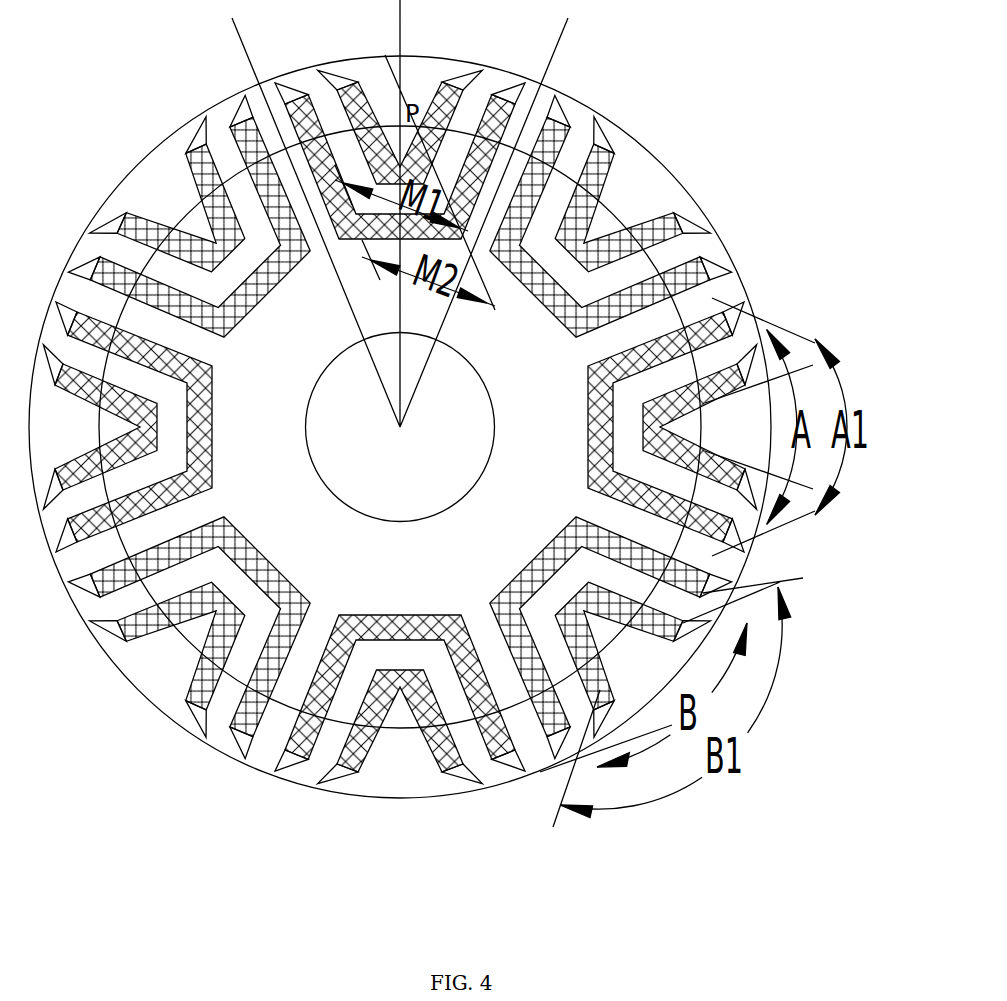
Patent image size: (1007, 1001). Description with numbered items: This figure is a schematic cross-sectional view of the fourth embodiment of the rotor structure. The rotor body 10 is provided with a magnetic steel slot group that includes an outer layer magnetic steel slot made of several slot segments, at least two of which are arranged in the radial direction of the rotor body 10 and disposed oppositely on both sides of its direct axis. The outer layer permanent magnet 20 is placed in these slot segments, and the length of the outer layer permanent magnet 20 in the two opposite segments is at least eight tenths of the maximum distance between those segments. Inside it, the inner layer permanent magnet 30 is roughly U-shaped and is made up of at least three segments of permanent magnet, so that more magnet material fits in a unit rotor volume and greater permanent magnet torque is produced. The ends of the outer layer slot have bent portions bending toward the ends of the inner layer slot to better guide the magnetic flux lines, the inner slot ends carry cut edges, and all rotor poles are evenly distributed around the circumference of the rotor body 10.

The rotor body 10 is at (400, 768).
The outer layer permanent magnet 20 is at (318, 788).
The inner layer permanent magnet 30 is at (282, 750).